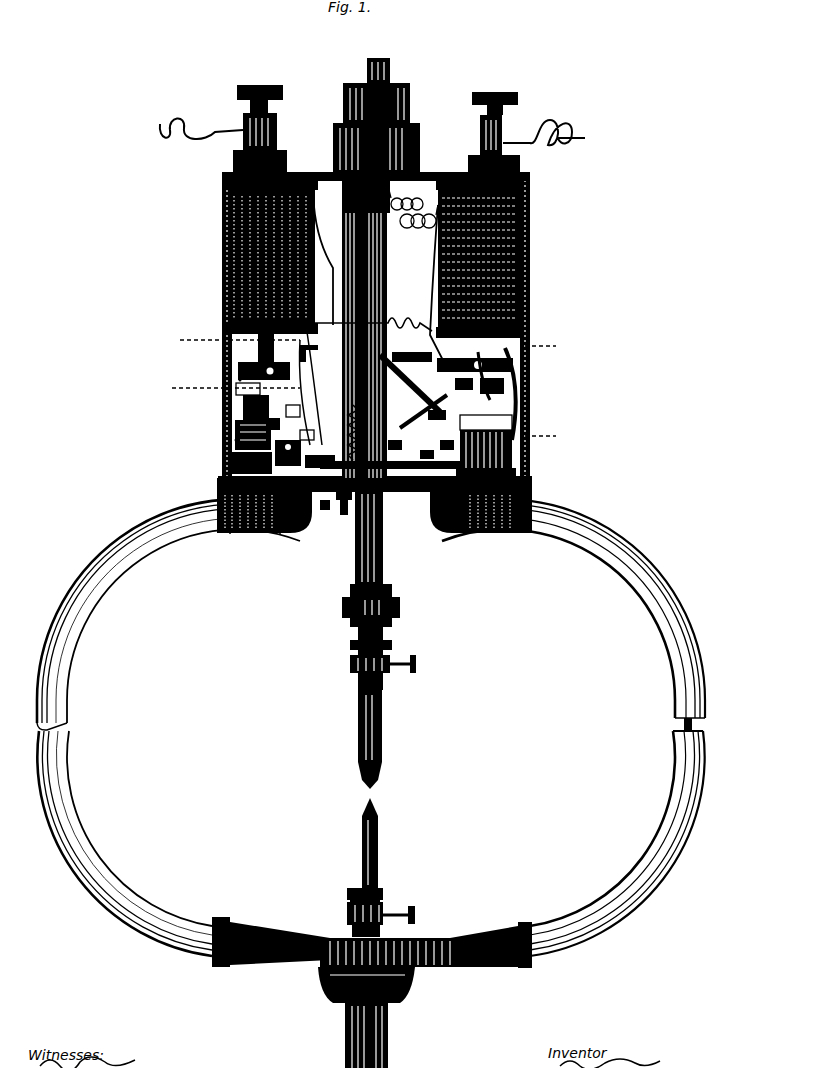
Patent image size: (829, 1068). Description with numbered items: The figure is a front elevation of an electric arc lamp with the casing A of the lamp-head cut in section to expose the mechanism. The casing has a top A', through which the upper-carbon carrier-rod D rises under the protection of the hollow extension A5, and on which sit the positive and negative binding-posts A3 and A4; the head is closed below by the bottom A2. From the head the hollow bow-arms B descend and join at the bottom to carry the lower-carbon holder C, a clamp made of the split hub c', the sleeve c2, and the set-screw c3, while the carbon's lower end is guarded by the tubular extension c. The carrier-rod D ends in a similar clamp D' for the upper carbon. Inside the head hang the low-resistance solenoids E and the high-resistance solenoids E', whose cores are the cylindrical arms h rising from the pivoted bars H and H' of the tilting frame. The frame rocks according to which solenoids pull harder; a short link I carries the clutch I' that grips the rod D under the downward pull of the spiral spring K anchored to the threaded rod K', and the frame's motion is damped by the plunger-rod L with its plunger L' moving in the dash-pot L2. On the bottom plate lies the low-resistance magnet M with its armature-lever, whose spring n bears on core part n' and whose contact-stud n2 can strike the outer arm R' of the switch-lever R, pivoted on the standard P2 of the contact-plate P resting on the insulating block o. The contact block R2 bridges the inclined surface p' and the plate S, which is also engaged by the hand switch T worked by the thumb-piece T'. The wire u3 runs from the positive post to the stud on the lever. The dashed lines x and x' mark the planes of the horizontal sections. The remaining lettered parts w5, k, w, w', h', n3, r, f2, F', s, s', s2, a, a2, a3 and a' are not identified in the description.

The hollow bow-arms B is at (91, 614).
The ring joint connector w5 is at (693, 723).
The casing of lamp-head A is at (386, 327).
The top of the casing A' is at (376, 167).
The bottom of the lamp-head A2 is at (390, 494).
The positive binding-post A3 is at (504, 132).
The negative binding-post A4 is at (270, 130).
The hollow extension on the top A5 is at (410, 100).
The contact-plate P is at (218, 480).
The insulating block or plate o is at (230, 535).
The inclined contact-surface p' is at (273, 542).
The thumb-piece T' is at (481, 519).
The high-resistance solenoids E' is at (257, 257).
The low-resistance solenoids E is at (492, 258).
The upper-carbon carrier-rod D is at (372, 535).
The holder or clamp D' is at (383, 653).
The spring coil wire k is at (526, 341).
The connecting wire w is at (372, 258).
The connecting wire w' is at (496, 317).
The section line x x is at (364, 342).
The section line x' x' is at (361, 410).
The cylindrical arms h is at (277, 348).
The bracket h' is at (310, 345).
The core-bar H' is at (260, 364).
The fourth wire u3 is at (240, 380).
The lever part n3 is at (246, 396).
The small spring n is at (230, 407).
The screw contact-stud n2 is at (243, 432).
The low-resistance electro-magnet M is at (235, 440).
The outer arm of switch-lever R' is at (250, 452).
The pivot r is at (250, 460).
The part of the core of the magnet n' is at (206, 463).
The contact block or bar R2 is at (295, 403).
The standard P2 is at (278, 421).
The switch-lever R is at (299, 432).
The wire f2 is at (316, 388).
The spring wire F' is at (312, 392).
The spring s is at (339, 432).
The spring seat s' is at (323, 454).
The spiral spring K is at (405, 458).
The contact-plate S is at (395, 453).
The switch T is at (430, 456).
The stud s2 is at (334, 507).
The threaded rod K' is at (335, 511).
The contact plate a is at (412, 349).
The core-bar H is at (496, 367).
The short link I is at (410, 383).
The carbon-carrier rod-clutch I' is at (423, 411).
The piston head or plunger L' is at (432, 422).
The tubular downward extension c is at (369, 678).
The split hub c' is at (375, 901).
The sleeve c2 is at (386, 897).
The set-screw c3 is at (416, 915).
The contact a2 is at (466, 384).
The contact arm a3 is at (495, 377).
The contact a' is at (449, 447).
The plunger-rod L is at (507, 435).
The dash-pot L2 is at (518, 470).
The lower-carbon holder C is at (374, 995).